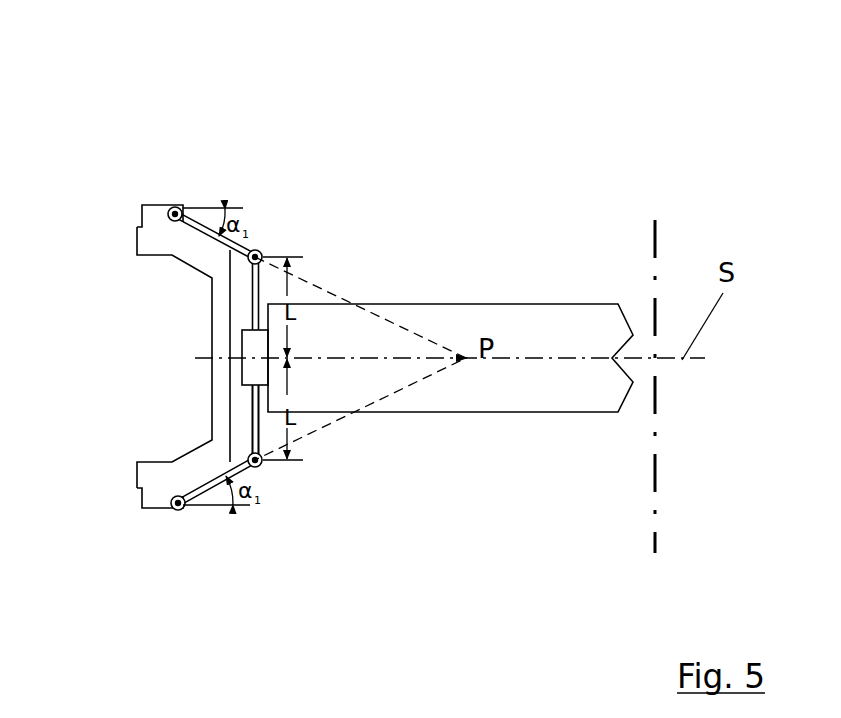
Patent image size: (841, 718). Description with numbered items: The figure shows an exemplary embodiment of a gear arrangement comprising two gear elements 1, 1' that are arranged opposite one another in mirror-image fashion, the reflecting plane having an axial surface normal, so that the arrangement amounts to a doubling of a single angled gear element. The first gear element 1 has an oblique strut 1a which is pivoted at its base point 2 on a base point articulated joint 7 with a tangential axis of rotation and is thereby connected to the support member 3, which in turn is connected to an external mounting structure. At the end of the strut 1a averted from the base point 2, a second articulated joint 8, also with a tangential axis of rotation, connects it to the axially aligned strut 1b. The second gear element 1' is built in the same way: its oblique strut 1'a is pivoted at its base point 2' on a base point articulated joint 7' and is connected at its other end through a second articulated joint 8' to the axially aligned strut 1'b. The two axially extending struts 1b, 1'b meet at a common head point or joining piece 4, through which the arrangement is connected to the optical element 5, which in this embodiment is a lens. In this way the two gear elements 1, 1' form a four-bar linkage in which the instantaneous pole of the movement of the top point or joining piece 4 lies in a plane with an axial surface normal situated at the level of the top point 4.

The gear element 1 is at (207, 464).
The second gear element 1' is at (205, 303).
The strut 1a is at (212, 483).
The strut 1'a is at (142, 264).
The axially aligned strut 1b is at (253, 433).
The axially aligned strut 1'b is at (182, 304).
The base point 2 is at (158, 573).
The base point 2' is at (160, 128).
The support member 3 is at (215, 347).
The top point or joining piece 4 is at (255, 362).
The optical element 5 is at (357, 332).
The base point articulated joint 7 is at (258, 572).
The base point articulated joint 7' is at (244, 125).
The second articulated joint 8 is at (380, 521).
The second articulated joint 8' is at (390, 173).